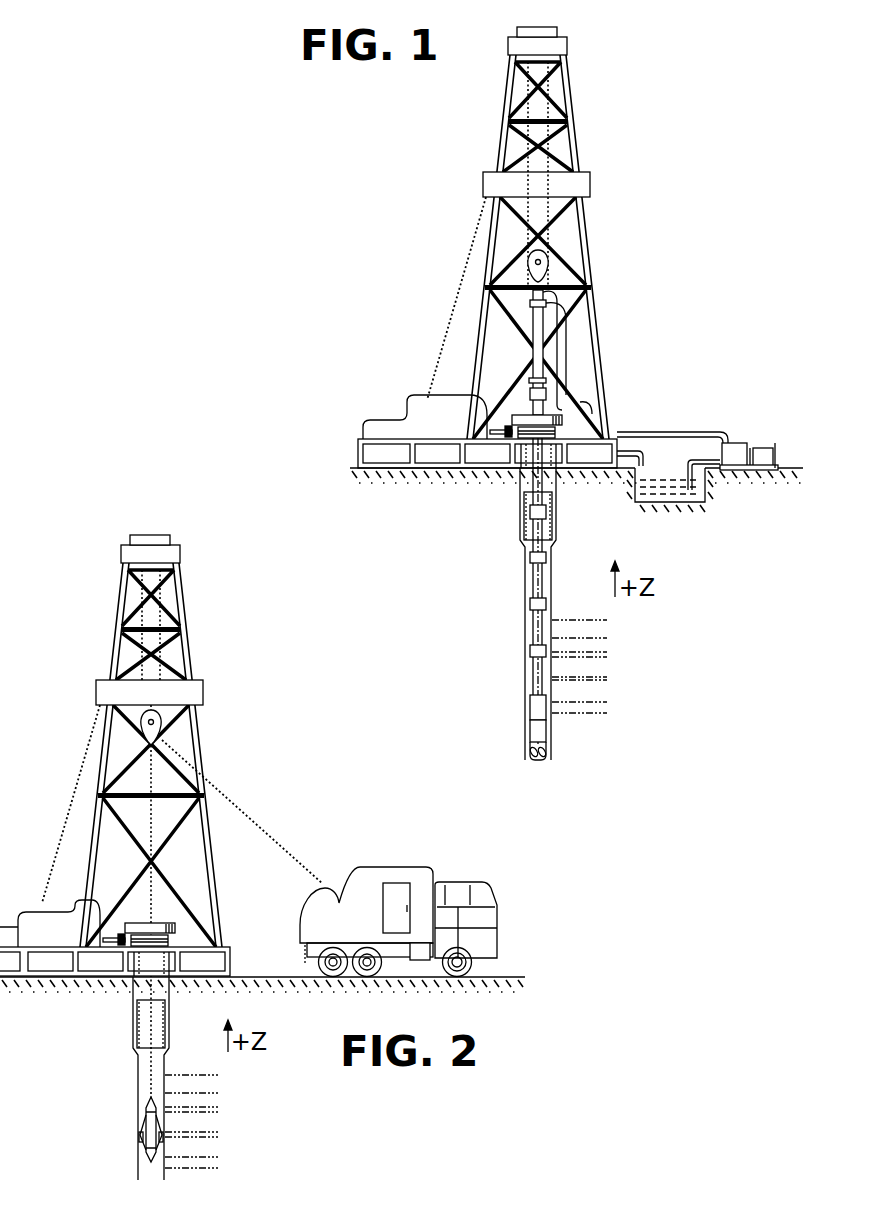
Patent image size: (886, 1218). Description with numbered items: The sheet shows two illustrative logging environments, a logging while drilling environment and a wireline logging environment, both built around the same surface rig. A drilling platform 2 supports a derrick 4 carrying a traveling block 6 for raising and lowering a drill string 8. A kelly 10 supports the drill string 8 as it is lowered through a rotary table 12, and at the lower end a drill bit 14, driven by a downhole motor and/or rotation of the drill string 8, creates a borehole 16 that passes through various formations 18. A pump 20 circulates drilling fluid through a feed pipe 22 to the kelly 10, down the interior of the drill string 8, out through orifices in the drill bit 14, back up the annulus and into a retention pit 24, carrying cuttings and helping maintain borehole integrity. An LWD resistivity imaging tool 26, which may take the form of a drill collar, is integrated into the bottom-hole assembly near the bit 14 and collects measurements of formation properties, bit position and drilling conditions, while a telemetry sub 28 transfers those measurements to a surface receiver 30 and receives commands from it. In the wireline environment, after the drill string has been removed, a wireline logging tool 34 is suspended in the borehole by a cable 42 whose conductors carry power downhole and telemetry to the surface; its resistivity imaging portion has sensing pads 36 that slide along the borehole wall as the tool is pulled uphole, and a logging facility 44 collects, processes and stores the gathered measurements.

In FIG. 1, the drilling platform 2 is at (357, 442).
In FIG. 2, the drilling platform 2 is at (232, 958).
In FIG. 1, the derrick 4 is at (575, 144).
In FIG. 2, the derrick 4 is at (218, 912).
In FIG. 1, the traveling block 6 is at (548, 258).
In FIG. 2, the traveling block 6 is at (160, 720).
In FIG. 1, the drill string 8 is at (543, 587).
In FIG. 1, the kelly 10 is at (537, 320).
In FIG. 1, the rotary table 12 is at (552, 413).
In FIG. 2, the rotary table 12 is at (167, 922).
In FIG. 1, the drill bit 14 is at (548, 749).
In FIG. 1, the borehole 16 is at (548, 593).
In FIG. 1, the formations 18 is at (608, 620).
In FIG. 2, the formations 18 is at (221, 1075).
In FIG. 1, the pump 20 is at (737, 446).
In FIG. 1, the feed pipe 22 is at (683, 433).
In FIG. 1, the retention pit 24 is at (652, 492).
In FIG. 1, the LWD resistivity imaging tool 26 is at (533, 723).
In FIG. 1, the telemetry sub 28 is at (532, 708).
In FIG. 1, the surface receiver 30 is at (542, 380).
In FIG. 2, the wireline logging tool 34 is at (150, 1123).
In FIG. 2, the sensing pads 36 is at (140, 1142).
In FIG. 2, the cable 42 is at (218, 790).
In FIG. 2, the logging facility 44 is at (362, 870).